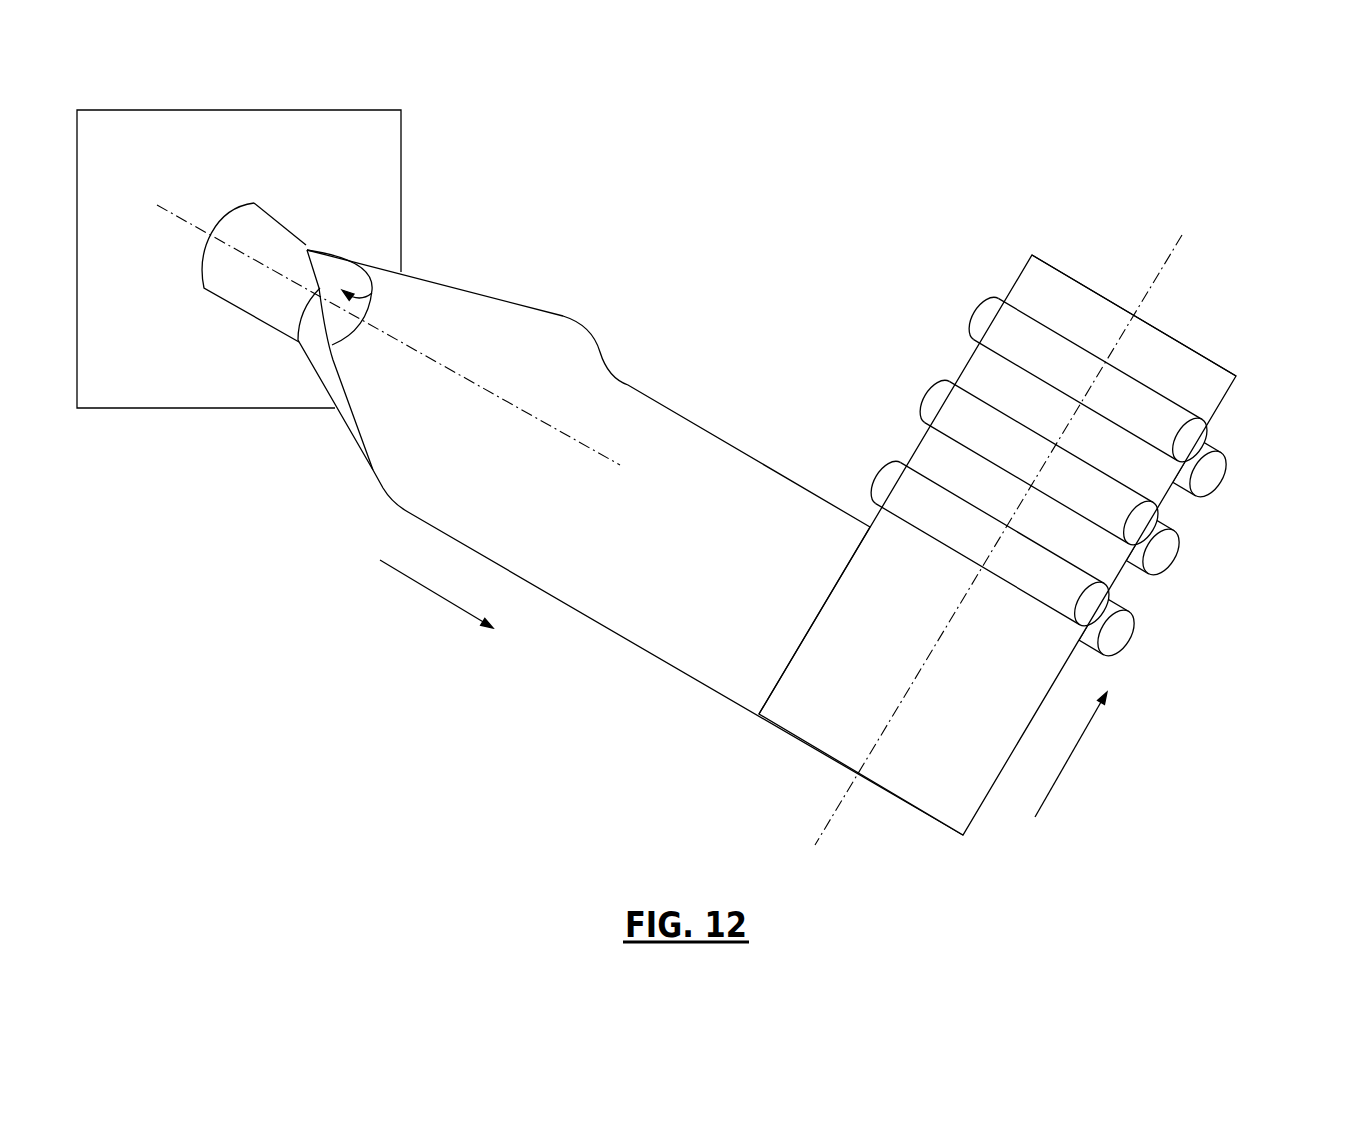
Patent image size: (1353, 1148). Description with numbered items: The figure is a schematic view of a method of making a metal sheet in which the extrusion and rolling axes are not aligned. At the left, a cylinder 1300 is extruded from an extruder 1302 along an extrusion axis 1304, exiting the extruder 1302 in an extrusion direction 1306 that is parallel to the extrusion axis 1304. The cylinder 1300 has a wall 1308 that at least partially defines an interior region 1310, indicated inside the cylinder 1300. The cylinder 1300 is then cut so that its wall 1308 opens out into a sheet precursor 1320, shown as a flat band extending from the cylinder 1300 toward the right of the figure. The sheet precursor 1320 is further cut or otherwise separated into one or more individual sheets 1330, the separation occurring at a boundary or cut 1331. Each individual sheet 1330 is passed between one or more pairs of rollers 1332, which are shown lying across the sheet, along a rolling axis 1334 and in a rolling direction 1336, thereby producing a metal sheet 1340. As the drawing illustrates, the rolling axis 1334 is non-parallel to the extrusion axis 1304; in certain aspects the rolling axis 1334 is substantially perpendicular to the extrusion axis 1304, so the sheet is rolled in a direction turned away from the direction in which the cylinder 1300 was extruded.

The cylinder 1300 is at (305, 242).
The extruder 1302 is at (287, 150).
The extrusion axis 1304 is at (492, 395).
The extrusion direction 1306 is at (427, 590).
The wall 1308 is at (338, 256).
The interior region 1310 is at (372, 293).
The sheet precursor 1320 is at (700, 448).
The individual sheet 1330 is at (783, 723).
The boundary or cut 1331 is at (812, 623).
The rollers 1332 is at (1192, 438).
The rolling axis 1334 is at (1165, 262).
The rolling direction 1336 is at (1075, 750).
The metal sheet 1340 is at (1061, 278).